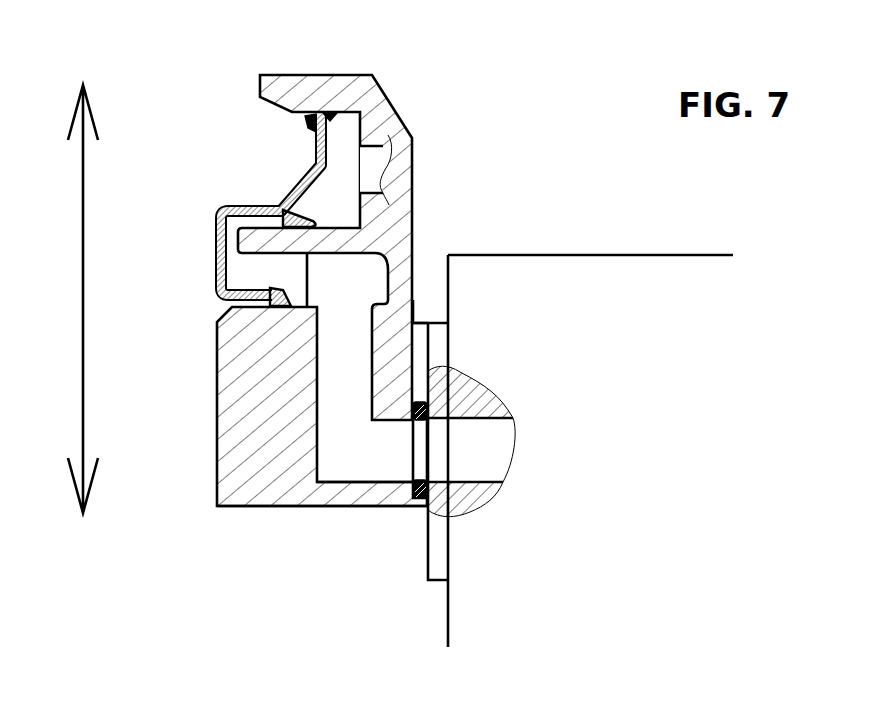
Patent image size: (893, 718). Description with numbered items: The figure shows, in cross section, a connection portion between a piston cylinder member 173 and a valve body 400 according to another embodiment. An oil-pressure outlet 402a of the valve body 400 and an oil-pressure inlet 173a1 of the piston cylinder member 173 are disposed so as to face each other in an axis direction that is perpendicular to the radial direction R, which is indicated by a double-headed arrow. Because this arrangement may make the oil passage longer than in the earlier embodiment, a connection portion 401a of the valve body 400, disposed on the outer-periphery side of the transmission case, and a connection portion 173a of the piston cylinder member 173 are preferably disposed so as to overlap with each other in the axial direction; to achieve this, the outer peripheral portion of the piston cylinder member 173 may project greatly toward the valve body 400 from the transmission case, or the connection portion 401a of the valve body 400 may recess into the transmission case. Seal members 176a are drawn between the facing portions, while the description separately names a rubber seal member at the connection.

The piston cylinder member 173 is at (217, 443).
The connection portion 173a is at (420, 322).
The oil-pressure inlet 173a1 is at (400, 457).
The O-ring 176a is at (430, 406).
The valve body 400 is at (555, 255).
The connection portion 401a is at (438, 321).
The oil-pressure outlet 402a is at (445, 457).
The radial direction R is at (81, 303).